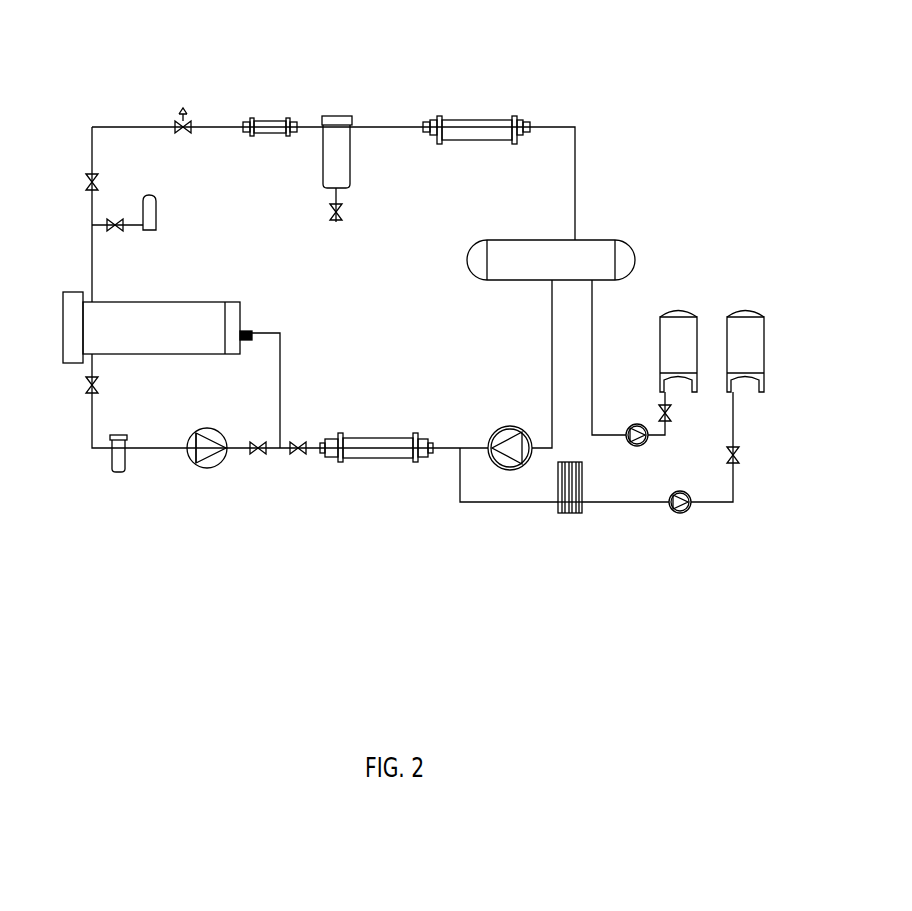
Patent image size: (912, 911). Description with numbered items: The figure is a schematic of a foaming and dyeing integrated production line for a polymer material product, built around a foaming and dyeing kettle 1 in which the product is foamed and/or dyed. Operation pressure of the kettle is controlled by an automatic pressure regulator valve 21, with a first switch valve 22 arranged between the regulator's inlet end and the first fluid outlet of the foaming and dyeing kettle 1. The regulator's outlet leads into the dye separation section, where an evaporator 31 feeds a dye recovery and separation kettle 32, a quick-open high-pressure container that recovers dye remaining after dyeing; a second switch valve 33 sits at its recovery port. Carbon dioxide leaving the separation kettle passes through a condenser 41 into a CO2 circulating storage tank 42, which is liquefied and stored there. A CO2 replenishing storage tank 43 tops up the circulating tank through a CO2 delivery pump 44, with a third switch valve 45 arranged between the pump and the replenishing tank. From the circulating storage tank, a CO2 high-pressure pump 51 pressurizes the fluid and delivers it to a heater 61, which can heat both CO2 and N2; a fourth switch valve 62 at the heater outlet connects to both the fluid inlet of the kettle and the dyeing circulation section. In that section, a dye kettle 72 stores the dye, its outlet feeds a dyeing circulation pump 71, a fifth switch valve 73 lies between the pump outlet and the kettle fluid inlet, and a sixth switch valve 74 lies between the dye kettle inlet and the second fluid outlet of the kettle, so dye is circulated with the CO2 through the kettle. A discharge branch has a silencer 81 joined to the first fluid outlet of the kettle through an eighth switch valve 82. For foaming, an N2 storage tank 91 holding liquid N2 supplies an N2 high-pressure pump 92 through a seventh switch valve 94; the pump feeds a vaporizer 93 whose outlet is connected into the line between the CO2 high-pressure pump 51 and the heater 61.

The foaming and dyeing kettle 1 is at (194, 314).
The automatic pressure regulator valve 21 is at (183, 113).
The first switch valve 22 is at (90, 178).
The evaporator 31 is at (263, 118).
The dye recovery and separation kettle 32 is at (338, 116).
The second switch valve 33 is at (339, 220).
The condenser 41 is at (472, 118).
The CO2 circulating storage tank 42 is at (592, 252).
The CO2 replenishing storage tank 43 is at (676, 320).
The CO2 delivery pump 44 is at (632, 423).
The third switch valve 45 is at (672, 418).
The CO2 high-pressure pump 51 is at (505, 472).
The heater 61 is at (380, 458).
The fourth switch valve 62 is at (298, 456).
The dyeing circulation pump 71 is at (200, 465).
The dye kettle 72 is at (112, 470).
The fifth switch valve 73 is at (257, 456).
The sixth switch valve 74 is at (88, 390).
The silencer 81 is at (150, 215).
The eighth switch valve 82 is at (116, 229).
The N2 storage tank 91 is at (748, 325).
The N2 high-pressure pump 92 is at (685, 513).
The vaporizer 93 is at (568, 515).
The seventh switch valve 94 is at (740, 453).